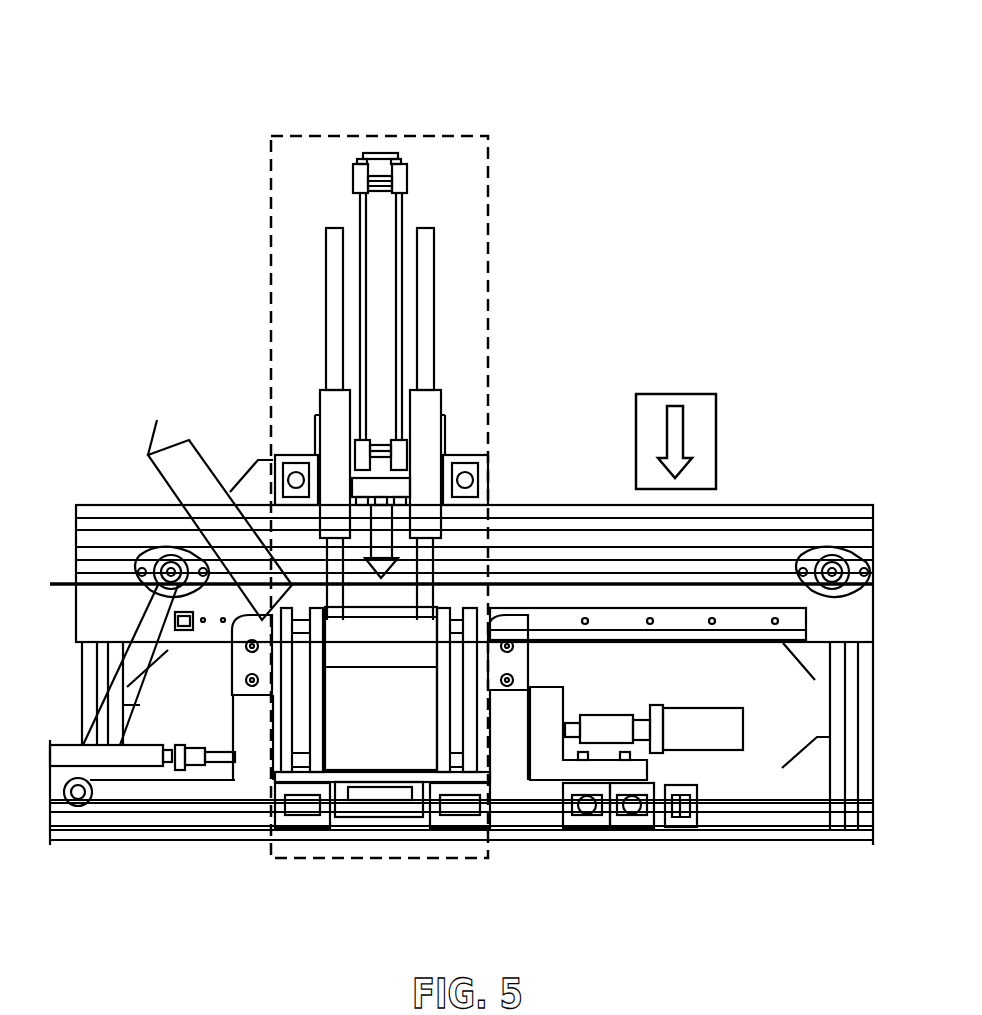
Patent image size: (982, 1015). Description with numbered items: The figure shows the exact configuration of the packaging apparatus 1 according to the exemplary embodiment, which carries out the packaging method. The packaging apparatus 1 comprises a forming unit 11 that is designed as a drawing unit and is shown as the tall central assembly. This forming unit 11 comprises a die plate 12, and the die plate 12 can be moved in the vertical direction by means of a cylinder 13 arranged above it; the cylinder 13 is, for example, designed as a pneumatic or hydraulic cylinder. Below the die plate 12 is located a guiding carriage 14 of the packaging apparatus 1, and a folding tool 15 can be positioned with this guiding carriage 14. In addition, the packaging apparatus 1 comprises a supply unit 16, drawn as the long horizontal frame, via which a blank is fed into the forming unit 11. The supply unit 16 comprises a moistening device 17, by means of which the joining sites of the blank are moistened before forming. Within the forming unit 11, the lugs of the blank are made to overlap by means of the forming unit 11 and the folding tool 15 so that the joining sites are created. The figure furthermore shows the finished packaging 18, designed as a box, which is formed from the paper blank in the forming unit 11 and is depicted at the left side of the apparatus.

The packaging apparatus 1 is at (213, 153).
The forming unit 11 is at (462, 136).
The die plate 12 is at (377, 652).
The cylinder 13 is at (387, 303).
The guiding carriage 14 is at (373, 775).
The folding tool 15 is at (517, 630).
The supply unit 16 is at (842, 507).
The moistening device 17 is at (716, 414).
The packaging 18 is at (182, 452).